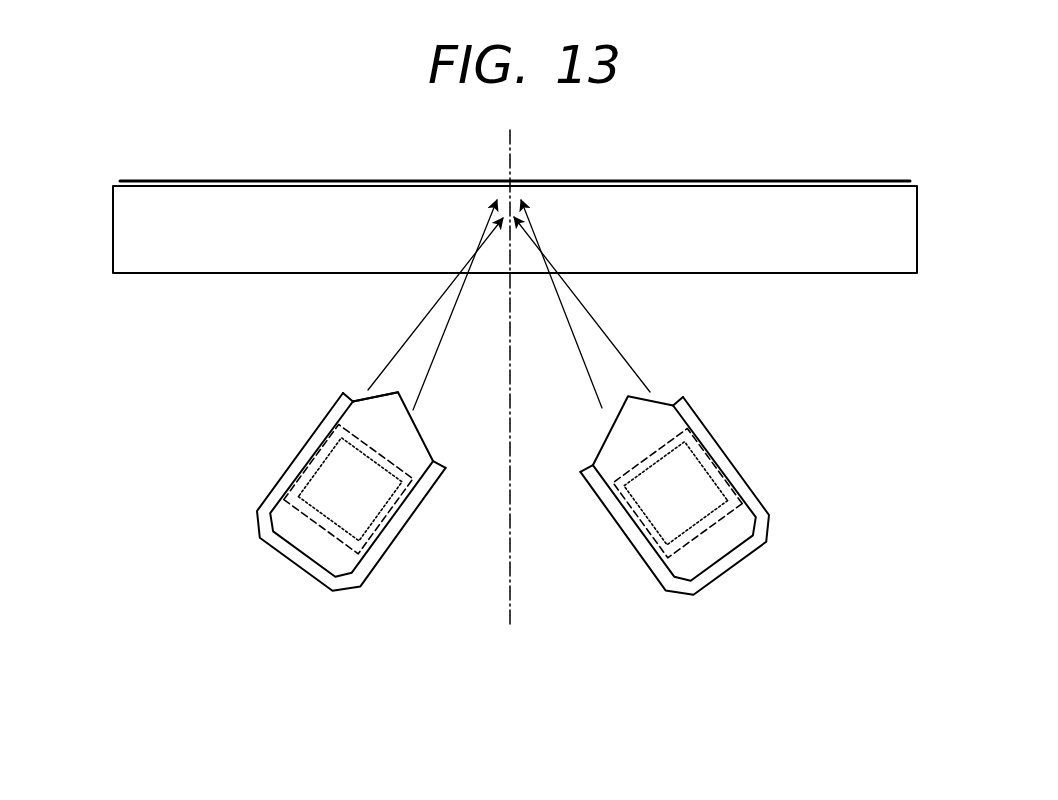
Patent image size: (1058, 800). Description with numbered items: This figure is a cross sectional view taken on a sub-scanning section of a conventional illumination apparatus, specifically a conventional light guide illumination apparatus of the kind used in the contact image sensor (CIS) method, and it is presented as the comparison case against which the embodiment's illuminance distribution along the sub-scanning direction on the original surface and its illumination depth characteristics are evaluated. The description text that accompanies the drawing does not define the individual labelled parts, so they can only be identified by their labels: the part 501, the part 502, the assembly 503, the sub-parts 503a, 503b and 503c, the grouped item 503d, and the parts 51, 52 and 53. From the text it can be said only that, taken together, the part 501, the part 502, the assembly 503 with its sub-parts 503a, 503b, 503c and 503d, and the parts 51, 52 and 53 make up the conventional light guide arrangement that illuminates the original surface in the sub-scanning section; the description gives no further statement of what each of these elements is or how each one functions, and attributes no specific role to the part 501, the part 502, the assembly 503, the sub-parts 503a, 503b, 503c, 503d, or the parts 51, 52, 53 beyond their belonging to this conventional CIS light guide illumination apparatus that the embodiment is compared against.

The optical axis / center line 501 is at (519, 181).
The recording medium (sheet) 502 is at (720, 207).
The sensor unit 503 is at (293, 496).
The light receiving element 503a is at (327, 478).
The light emitting portion 503b is at (362, 403).
The light receiving area 503c is at (286, 489).
The sensor element group 503d is at (259, 489).
The housing 51 is at (297, 552).
The lens body 52 is at (423, 440).
The cover 53 is at (326, 418).